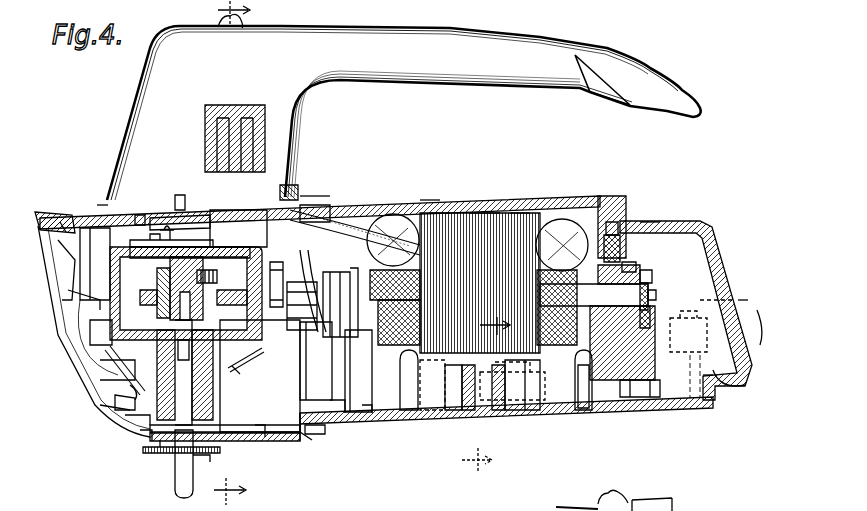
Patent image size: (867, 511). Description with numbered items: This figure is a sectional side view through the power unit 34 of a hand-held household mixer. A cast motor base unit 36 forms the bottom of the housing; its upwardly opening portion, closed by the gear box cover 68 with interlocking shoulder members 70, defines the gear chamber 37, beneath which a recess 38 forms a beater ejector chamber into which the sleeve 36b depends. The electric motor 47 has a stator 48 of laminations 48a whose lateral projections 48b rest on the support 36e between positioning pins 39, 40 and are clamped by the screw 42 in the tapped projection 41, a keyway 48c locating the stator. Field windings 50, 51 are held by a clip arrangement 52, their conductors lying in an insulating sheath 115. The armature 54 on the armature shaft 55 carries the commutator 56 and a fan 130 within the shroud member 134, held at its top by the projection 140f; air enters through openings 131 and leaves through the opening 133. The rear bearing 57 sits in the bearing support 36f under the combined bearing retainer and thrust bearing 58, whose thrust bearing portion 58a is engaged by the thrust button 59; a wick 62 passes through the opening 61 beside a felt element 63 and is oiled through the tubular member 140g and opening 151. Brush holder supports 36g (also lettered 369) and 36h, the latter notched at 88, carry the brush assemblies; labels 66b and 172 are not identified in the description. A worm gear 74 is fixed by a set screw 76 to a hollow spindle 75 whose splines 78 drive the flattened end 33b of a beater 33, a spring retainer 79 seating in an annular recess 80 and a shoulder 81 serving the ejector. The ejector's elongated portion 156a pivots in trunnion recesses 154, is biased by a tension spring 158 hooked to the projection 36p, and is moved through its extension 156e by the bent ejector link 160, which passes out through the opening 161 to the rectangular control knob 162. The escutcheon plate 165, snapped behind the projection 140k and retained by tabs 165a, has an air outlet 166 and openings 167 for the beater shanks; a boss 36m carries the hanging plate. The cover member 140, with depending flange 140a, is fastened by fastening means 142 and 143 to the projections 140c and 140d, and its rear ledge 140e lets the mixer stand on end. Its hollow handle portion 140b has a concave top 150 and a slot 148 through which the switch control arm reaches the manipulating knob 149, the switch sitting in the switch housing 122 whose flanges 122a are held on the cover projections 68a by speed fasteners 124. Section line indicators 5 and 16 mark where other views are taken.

The cover member 140 is at (392, 197).
The handle portion 140b is at (601, 49).
The manipulating knob 149 is at (222, 24).
The section line 5 is at (241, 253).
The control knob 162 is at (229, 108).
The opening 161 is at (289, 183).
The depending projections 140f is at (314, 192).
The ejector link 160 is at (238, 228).
The switch housing 122 is at (206, 217).
The speed fastening means 124 is at (171, 235).
The hollow spindles 75 is at (167, 228).
The gear box cover 68 is at (139, 240).
The integral projections 68a is at (180, 194).
The lateral flanges 122a is at (140, 214).
The gear chamber 37 is at (114, 240).
The downwardly directed projections 140c is at (99, 215).
The projection 140k is at (64, 222).
The worm gears 74 is at (160, 290).
The flutes or splines 78 is at (186, 288).
The set screws 76 is at (210, 268).
The spring retaining means 79 is at (185, 372).
The flattened portion 33b is at (179, 355).
The beater elements 33 is at (168, 497).
The openings 167 is at (177, 455).
The annular recesses 80 is at (197, 458).
The enlarged shoulder portion 81 is at (146, 455).
The recess 38 is at (246, 433).
The opening 133 is at (262, 440).
The sleeve portion 36b is at (146, 441).
The elongated portion 156a is at (140, 424).
The escutcheon plate 165 is at (120, 418).
The boss 36m is at (120, 400).
The trunnion receiving recesses 154 is at (132, 391).
The tension spring 158 is at (118, 376).
The projection 36p is at (108, 352).
The interlocking shoulder members 70 is at (95, 332).
The fastening means 142 is at (92, 303).
The air outlet opening 166 is at (68, 278).
The lateral extension 156e is at (246, 359).
The fan 130 is at (301, 327).
The shroud member 134 is at (314, 205).
The spring seat tab 165a is at (306, 442).
The brush holder supports 36h is at (336, 425).
The frame lug 369 is at (366, 426).
The notches 88 is at (358, 371).
The commutator 56 is at (340, 280).
The insulating sheath 115 is at (352, 222).
The clip arrangement 52 is at (396, 215).
The field winding 50 is at (560, 220).
The bearing support 66b is at (418, 306).
The keyway 48c is at (409, 302).
The clamping screw 42 is at (480, 283).
The section line 16 is at (486, 387).
The electric motor 47 is at (457, 209).
The stator laminations 48a is at (498, 212).
The stator 48 is at (516, 212).
The motor driven unit 34 is at (447, 195).
The opening 151 is at (611, 221).
The wick 62 is at (614, 236).
The tubular member 140g is at (645, 222).
The armature shaft 55 is at (594, 298).
The armature 54 is at (600, 275).
The field winding 51 is at (590, 330).
The rear bearing 57 is at (645, 290).
The thrust button 59 is at (650, 310).
The thrust bearing portion 58a is at (650, 298).
The combined bearing retainer and thrust bearing 58 is at (652, 285).
The opening 61 is at (628, 270).
The felt element 63 is at (656, 330).
The cord 172 is at (700, 300).
The projections 140d is at (708, 358).
The depending flange 140a is at (742, 300).
The flange or ledge 140e is at (757, 318).
The fastening means 143 is at (733, 389).
The openings 131 is at (711, 400).
The bearing support 36f is at (632, 405).
The motor base unit 36 is at (571, 424).
The pin 40 is at (578, 424).
The support 36e is at (520, 424).
The lateral projections 48b is at (502, 392).
The tapped projection 41 is at (470, 422).
The brush holder support 36g is at (440, 424).
The pin 39 is at (408, 422).
The slot 148 is at (566, 506).
The concave surface 150 is at (650, 500).